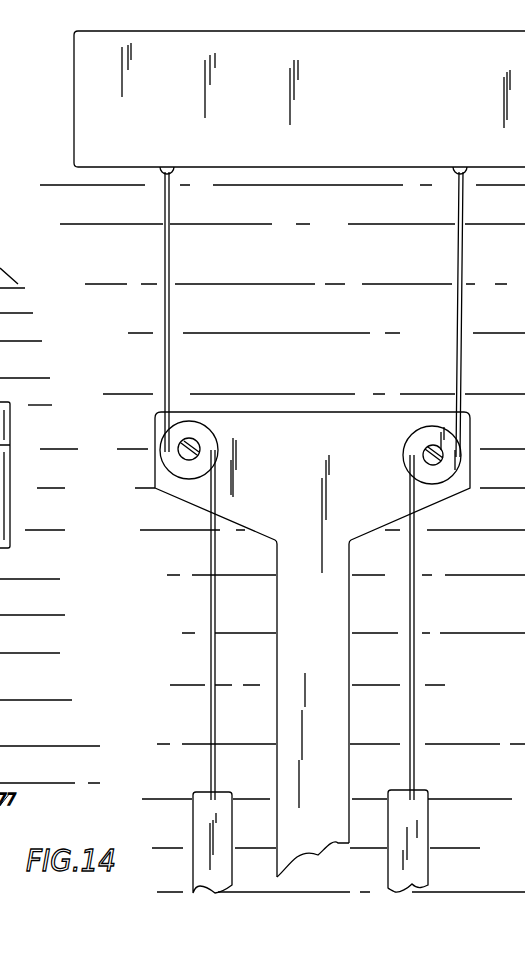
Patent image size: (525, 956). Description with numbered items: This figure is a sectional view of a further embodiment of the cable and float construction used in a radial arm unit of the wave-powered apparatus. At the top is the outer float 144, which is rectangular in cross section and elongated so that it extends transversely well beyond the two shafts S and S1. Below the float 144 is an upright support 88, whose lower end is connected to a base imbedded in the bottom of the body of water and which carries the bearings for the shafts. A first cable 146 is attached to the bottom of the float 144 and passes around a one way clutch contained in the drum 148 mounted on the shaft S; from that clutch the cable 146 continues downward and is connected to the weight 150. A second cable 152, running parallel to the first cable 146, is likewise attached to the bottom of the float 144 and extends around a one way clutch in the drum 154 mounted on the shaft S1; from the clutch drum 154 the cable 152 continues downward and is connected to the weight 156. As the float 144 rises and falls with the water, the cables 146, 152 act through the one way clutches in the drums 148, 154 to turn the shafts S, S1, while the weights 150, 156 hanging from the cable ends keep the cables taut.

The outer float 144 is at (384, 109).
The upright support 88 is at (223, 420).
The second cable 152 is at (170, 323).
The first cable 146 is at (459, 325).
The drum 154 is at (186, 451).
The drum 148 is at (423, 454).
The shaft S1 is at (180, 455).
The shaft S is at (443, 457).
The weight 156 is at (200, 823).
The weight 150 is at (417, 833).